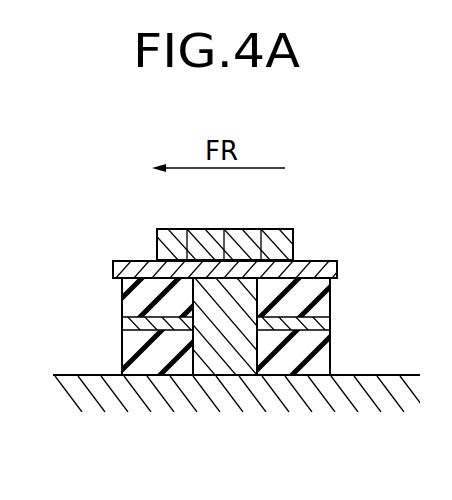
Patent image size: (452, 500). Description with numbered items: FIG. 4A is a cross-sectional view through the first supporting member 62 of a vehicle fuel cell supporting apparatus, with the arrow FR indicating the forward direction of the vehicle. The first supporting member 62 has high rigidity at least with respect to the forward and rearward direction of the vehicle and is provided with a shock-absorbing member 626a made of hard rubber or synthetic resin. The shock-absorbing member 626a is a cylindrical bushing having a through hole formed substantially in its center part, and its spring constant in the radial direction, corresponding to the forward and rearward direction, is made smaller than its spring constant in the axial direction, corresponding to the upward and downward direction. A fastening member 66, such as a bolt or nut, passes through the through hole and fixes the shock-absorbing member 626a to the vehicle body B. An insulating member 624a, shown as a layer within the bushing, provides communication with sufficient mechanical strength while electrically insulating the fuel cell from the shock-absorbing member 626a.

The first supporting member 62 is at (219, 278).
The fastening member 66 is at (217, 287).
The shock-absorbing member 626a is at (133, 300).
The insulating member 624a is at (133, 322).
The vehicle body B is at (353, 388).